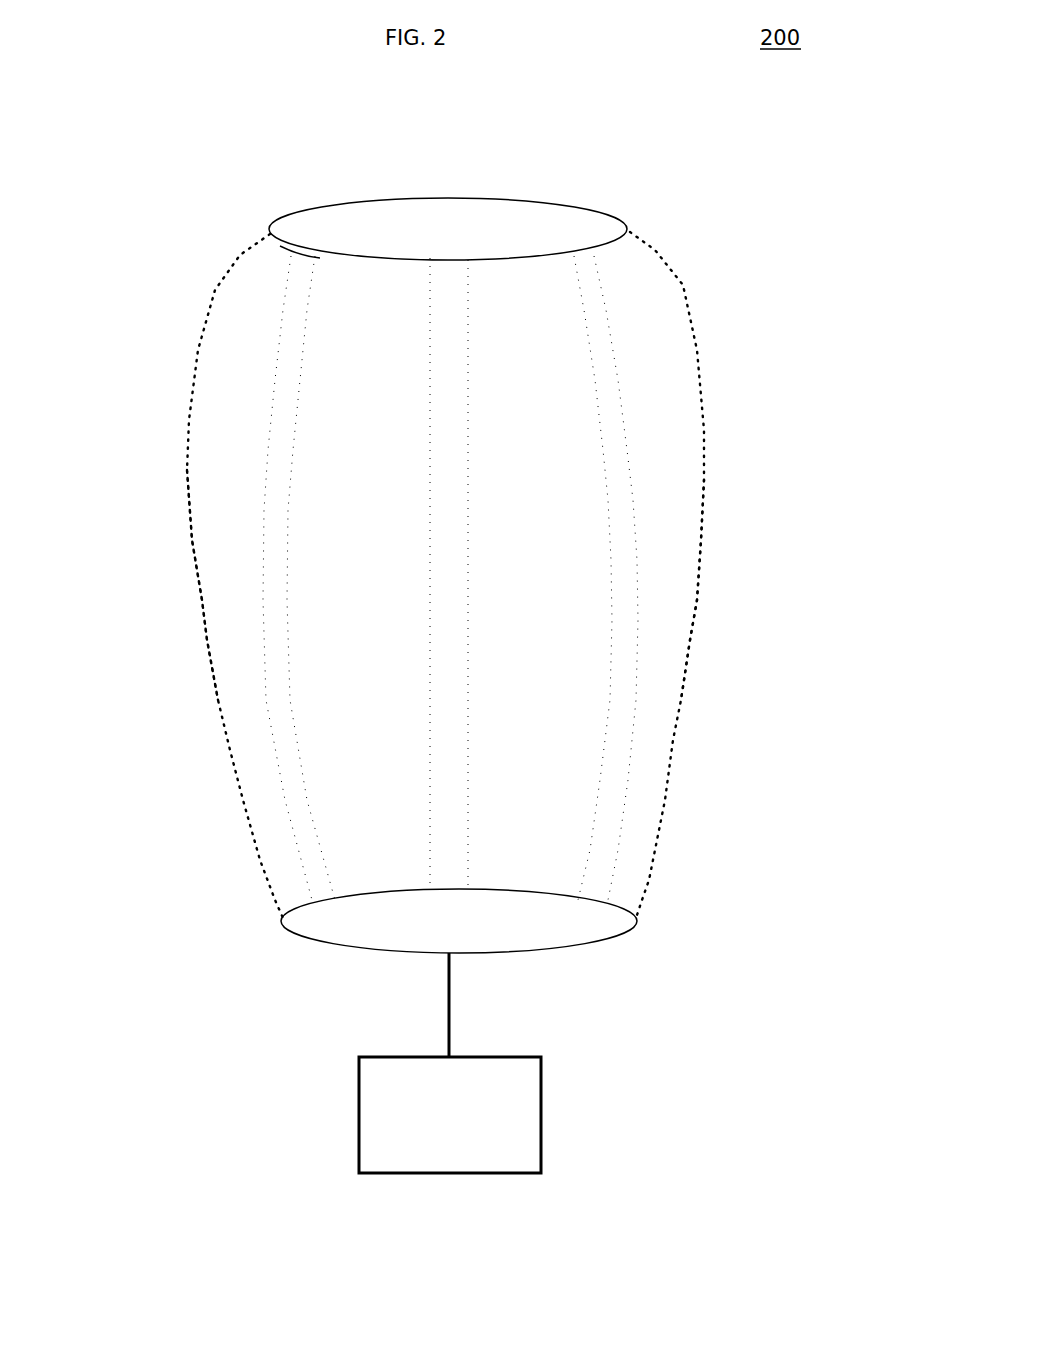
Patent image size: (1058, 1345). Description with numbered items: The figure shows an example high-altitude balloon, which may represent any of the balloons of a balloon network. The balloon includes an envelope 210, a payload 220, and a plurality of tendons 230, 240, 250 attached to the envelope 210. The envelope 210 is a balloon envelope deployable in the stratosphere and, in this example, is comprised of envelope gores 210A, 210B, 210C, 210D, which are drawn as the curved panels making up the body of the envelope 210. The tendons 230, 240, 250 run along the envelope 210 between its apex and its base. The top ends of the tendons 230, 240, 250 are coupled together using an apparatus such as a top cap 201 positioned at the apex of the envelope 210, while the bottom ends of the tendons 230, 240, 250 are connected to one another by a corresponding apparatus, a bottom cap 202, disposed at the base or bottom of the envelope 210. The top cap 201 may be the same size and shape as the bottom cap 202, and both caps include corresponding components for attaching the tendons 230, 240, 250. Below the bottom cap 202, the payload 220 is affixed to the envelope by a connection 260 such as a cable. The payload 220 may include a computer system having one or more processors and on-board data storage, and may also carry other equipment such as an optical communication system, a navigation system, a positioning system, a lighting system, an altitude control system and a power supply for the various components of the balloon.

The top cap 201 is at (602, 208).
The bottom cap 202 is at (398, 942).
The envelope 210 is at (703, 398).
The envelope gore 210A is at (218, 627).
The envelope gore 210B is at (347, 705).
The envelope gore 210C is at (573, 724).
The envelope gore 210D is at (677, 568).
The payload 220 is at (358, 1107).
The tendon 230 is at (307, 247).
The tendon 240 is at (448, 257).
The tendon 250 is at (573, 253).
The connection 260 is at (452, 1018).